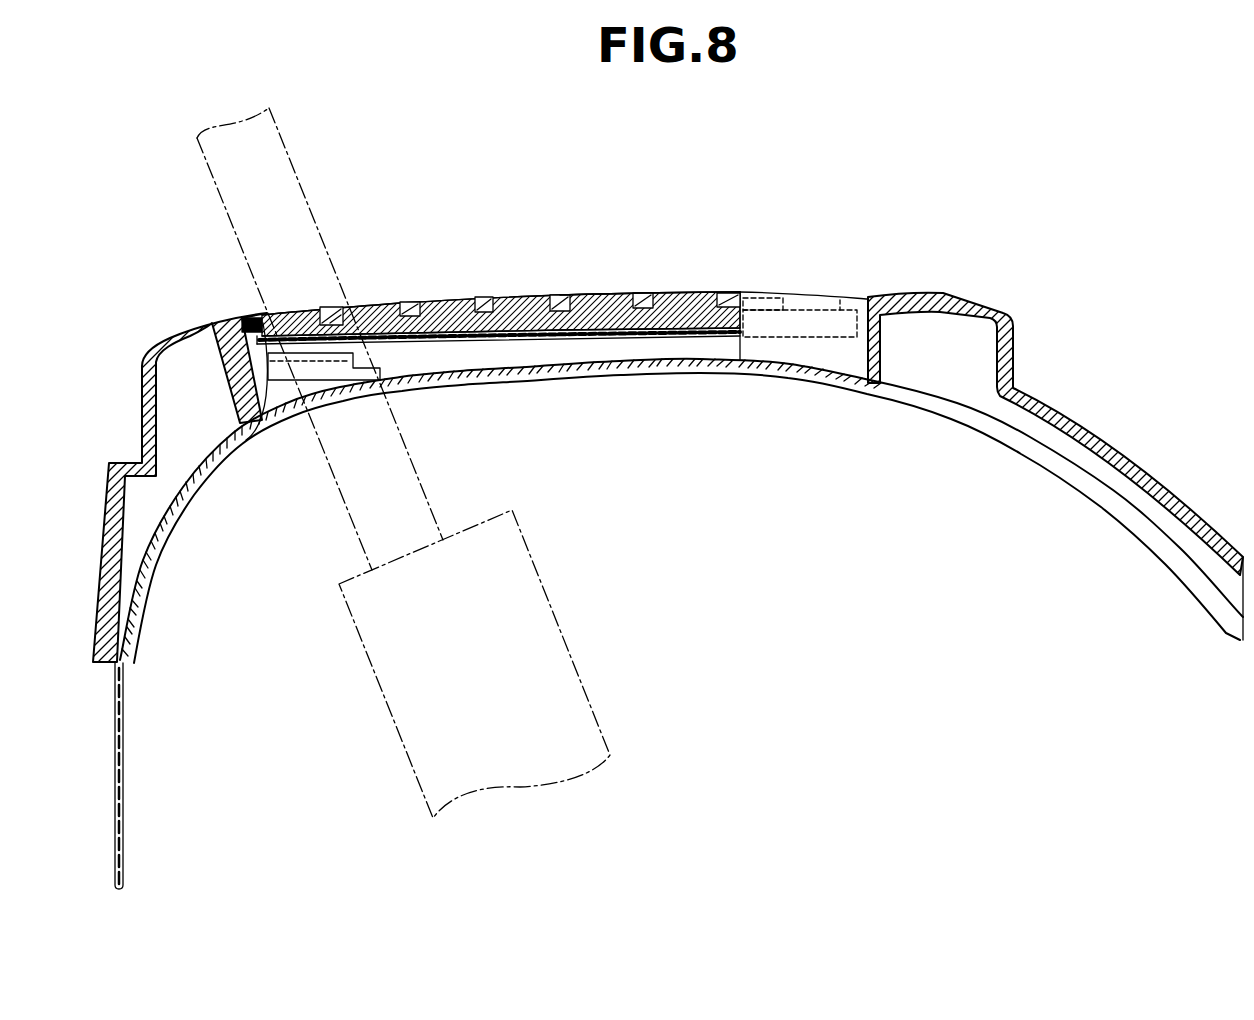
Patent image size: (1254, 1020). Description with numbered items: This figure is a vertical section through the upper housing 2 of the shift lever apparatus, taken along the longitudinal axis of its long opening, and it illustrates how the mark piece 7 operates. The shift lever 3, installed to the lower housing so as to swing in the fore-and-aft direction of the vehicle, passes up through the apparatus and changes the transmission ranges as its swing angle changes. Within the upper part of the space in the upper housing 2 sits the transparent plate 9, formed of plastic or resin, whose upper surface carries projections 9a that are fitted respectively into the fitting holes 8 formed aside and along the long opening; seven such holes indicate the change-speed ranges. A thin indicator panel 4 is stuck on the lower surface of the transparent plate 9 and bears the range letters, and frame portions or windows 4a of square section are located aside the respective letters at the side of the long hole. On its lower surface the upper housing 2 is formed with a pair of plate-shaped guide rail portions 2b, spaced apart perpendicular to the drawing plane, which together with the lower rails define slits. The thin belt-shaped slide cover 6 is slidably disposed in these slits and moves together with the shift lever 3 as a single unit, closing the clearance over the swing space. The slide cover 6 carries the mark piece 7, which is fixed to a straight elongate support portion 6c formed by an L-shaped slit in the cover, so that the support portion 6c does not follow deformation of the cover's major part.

The upper housing 2 is at (922, 678).
The guide rail portion 2b is at (1012, 442).
The shift lever 3 is at (218, 193).
The indicator panel 4 is at (663, 340).
The frame portion 4a is at (610, 340).
The slide cover 6 is at (123, 826).
The support portion 6c is at (373, 327).
The mark piece 7 is at (297, 323).
The fitting hole 8 is at (656, 290).
The transparent plate 9 is at (492, 340).
The projection 9a is at (512, 290).